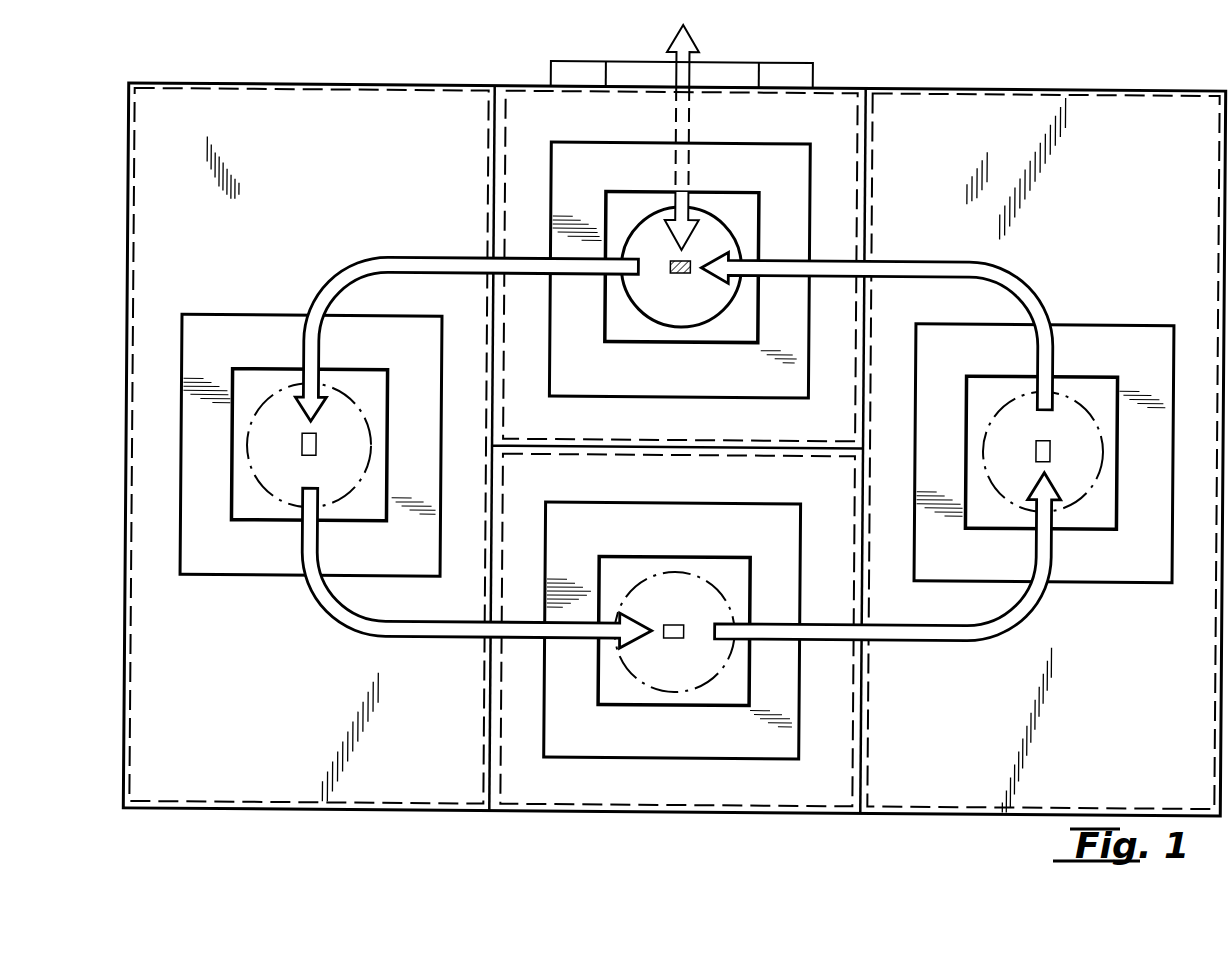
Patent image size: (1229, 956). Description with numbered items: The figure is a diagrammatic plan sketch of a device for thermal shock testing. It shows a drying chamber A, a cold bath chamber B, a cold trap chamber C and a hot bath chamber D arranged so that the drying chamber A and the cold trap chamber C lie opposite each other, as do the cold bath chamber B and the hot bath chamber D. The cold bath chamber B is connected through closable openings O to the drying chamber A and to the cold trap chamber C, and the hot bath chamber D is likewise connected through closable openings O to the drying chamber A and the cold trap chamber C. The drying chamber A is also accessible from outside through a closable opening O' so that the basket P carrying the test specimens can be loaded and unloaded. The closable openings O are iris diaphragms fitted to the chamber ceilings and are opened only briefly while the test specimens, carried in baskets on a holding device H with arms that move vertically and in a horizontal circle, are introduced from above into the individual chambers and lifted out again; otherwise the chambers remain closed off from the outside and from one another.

The drying chamber A is at (820, 112).
The cold bath chamber B is at (327, 106).
The cold trap chamber C is at (578, 787).
The hot bath chamber D is at (1140, 120).
The closable opening O is at (685, 466).
The closable opening O' is at (682, 134).
The basket P is at (725, 240).
The holding device H is at (681, 277).